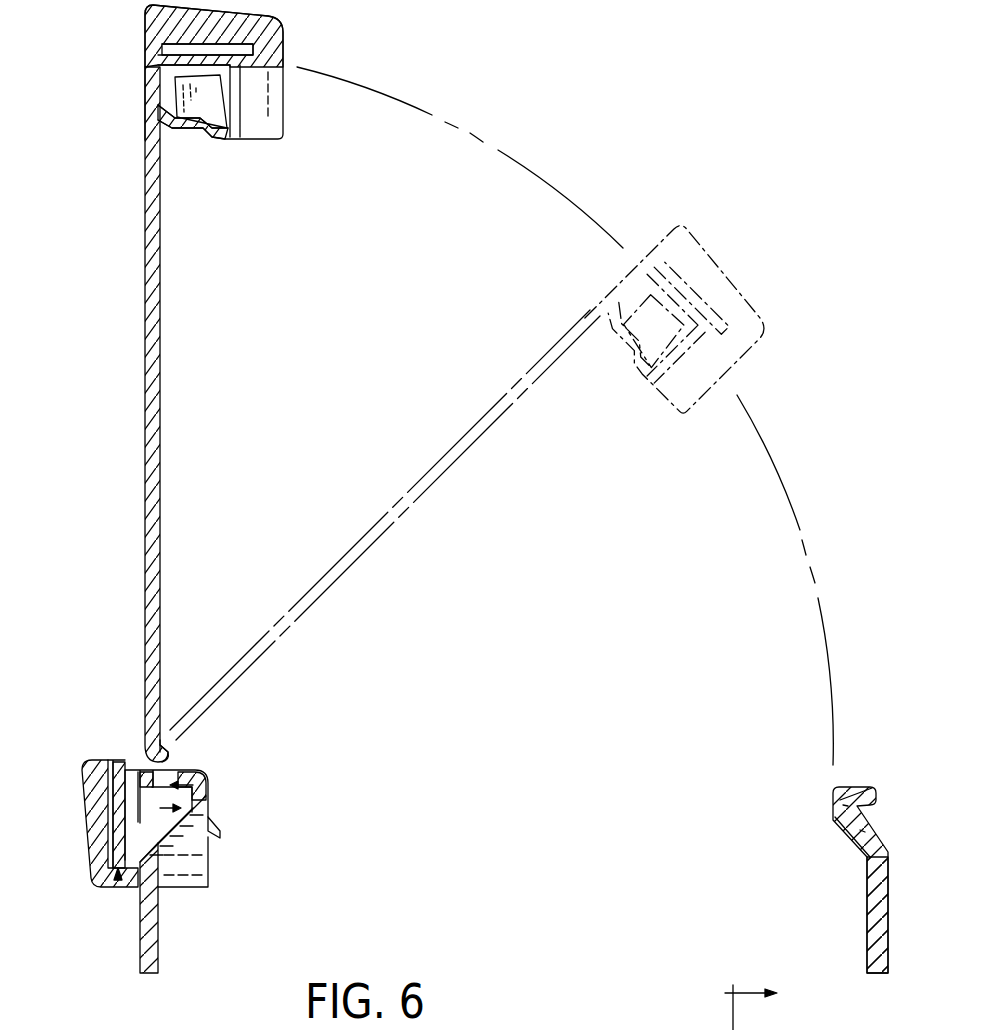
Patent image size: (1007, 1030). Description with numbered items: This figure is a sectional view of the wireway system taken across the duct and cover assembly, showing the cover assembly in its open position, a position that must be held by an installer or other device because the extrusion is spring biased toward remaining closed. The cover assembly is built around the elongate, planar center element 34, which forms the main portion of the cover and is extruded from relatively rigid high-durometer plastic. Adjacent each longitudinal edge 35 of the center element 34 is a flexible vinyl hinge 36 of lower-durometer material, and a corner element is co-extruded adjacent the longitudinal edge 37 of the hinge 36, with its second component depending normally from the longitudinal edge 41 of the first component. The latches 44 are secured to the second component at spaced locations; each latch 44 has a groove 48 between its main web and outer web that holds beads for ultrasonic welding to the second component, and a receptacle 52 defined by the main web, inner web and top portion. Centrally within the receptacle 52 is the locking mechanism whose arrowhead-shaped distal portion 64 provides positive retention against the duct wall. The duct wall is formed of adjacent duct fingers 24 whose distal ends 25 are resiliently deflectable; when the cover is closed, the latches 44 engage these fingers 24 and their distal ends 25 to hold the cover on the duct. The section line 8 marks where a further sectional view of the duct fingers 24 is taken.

The latch 44 is at (300, 31).
The center element 34 is at (162, 358).
The longitudinal edge of hinge 37 is at (140, 750).
The longitudinal edge of first component 41 is at (116, 757).
The longitudinal edge of center element 35 is at (165, 748).
The hinge 36 is at (163, 761).
The receptacle 52 is at (212, 800).
The distal portion 64 is at (200, 873).
The groove 48 is at (118, 878).
The duct finger 24 is at (164, 935).
The distal end 25 is at (880, 783).
The section line 8 is at (764, 1005).